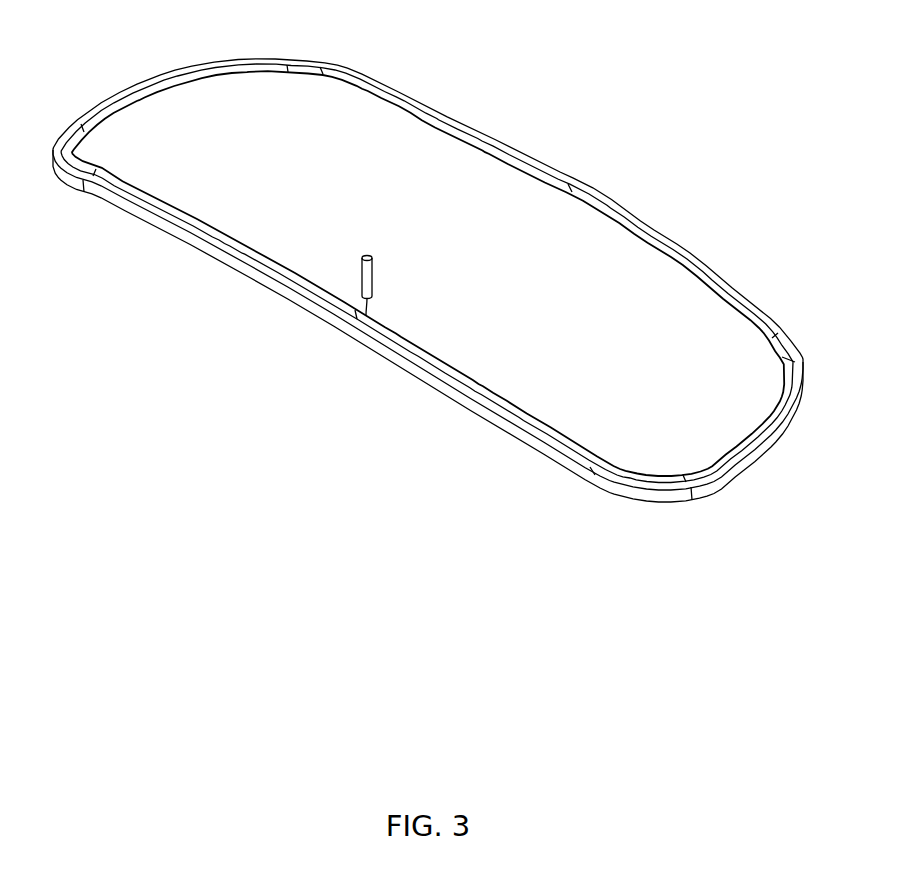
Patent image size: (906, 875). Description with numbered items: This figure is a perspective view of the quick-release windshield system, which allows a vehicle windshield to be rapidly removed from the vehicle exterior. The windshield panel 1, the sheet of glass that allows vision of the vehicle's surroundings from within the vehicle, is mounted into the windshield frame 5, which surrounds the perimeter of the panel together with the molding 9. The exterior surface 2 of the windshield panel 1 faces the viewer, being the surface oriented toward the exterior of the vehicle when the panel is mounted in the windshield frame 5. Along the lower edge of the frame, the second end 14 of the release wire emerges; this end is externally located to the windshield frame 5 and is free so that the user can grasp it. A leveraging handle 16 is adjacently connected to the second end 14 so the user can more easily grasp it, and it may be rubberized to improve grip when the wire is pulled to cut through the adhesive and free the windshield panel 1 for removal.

The windshield panel 1 is at (70, 149).
The exterior surface 2 is at (282, 173).
The windshield frame 5 is at (166, 72).
The molding 9 is at (114, 106).
The second end 14 is at (370, 299).
The leveraging handle 16 is at (371, 257).